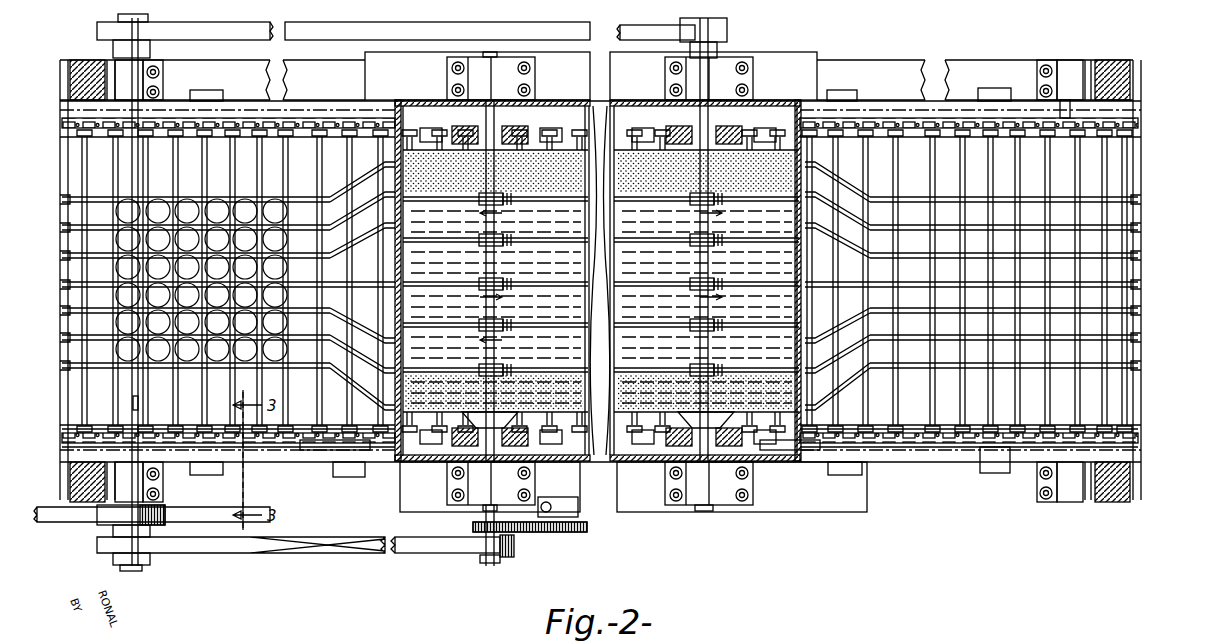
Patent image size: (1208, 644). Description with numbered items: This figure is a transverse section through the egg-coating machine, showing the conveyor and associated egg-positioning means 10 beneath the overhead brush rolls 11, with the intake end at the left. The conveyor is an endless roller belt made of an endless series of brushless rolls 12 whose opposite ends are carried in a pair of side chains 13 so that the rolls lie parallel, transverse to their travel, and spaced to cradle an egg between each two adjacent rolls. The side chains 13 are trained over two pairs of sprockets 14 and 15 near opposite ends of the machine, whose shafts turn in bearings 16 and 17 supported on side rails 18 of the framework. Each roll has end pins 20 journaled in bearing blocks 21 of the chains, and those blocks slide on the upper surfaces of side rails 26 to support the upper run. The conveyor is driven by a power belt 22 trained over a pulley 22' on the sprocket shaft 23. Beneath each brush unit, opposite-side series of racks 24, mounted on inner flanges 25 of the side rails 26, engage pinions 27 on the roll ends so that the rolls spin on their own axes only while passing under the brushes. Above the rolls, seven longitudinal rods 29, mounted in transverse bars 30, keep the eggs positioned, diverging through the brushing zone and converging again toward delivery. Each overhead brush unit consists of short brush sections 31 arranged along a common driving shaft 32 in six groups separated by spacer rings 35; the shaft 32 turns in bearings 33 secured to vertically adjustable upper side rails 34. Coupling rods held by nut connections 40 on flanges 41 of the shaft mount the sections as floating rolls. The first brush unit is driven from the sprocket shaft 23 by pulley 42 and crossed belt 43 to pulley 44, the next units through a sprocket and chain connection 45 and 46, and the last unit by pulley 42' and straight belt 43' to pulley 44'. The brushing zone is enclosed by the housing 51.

The conveyor and associated egg-positioning means 10 is at (305, 185).
The overhead brush rolls 11 is at (586, 260).
The brushless rolls 12 is at (110, 396).
The side chains 13 is at (76, 440).
The sprockets 14 is at (100, 118).
The sprockets 15 is at (1090, 118).
The bearings 16 is at (140, 52).
The bearings 17 is at (1066, 64).
The side rails 18 is at (165, 64).
The pins 20 is at (166, 118).
The bearing blocks 21 is at (990, 468).
The power belt 22 is at (149, 502).
The pulley 22' is at (150, 521).
The sprocket shaft 23 is at (1066, 106).
The racks 24 is at (648, 135).
The inner flanges 25 is at (330, 132).
The side rails 26 is at (868, 492).
The pinions 27 is at (206, 128).
The rods 29 is at (62, 258).
The transverse bars 30 is at (62, 239).
The brush sections 31 is at (598, 290).
The driving shaft 32 is at (500, 125).
The bearings 33 is at (498, 62).
The upper side rails 34 is at (630, 58).
The spacer rings 35 is at (601, 281).
The nut connections 40 is at (522, 128).
The flanges 41 is at (468, 128).
The pulley 42 is at (106, 555).
The pulley 42' is at (151, 15).
The crossed belt 43 is at (241, 553).
The straight belt 43' is at (343, 22).
The pulley 44 is at (445, 558).
The pulley 44' is at (699, 24).
The sprocket 45 is at (506, 558).
The chain 46 is at (550, 534).
The housing 51 is at (356, 460).